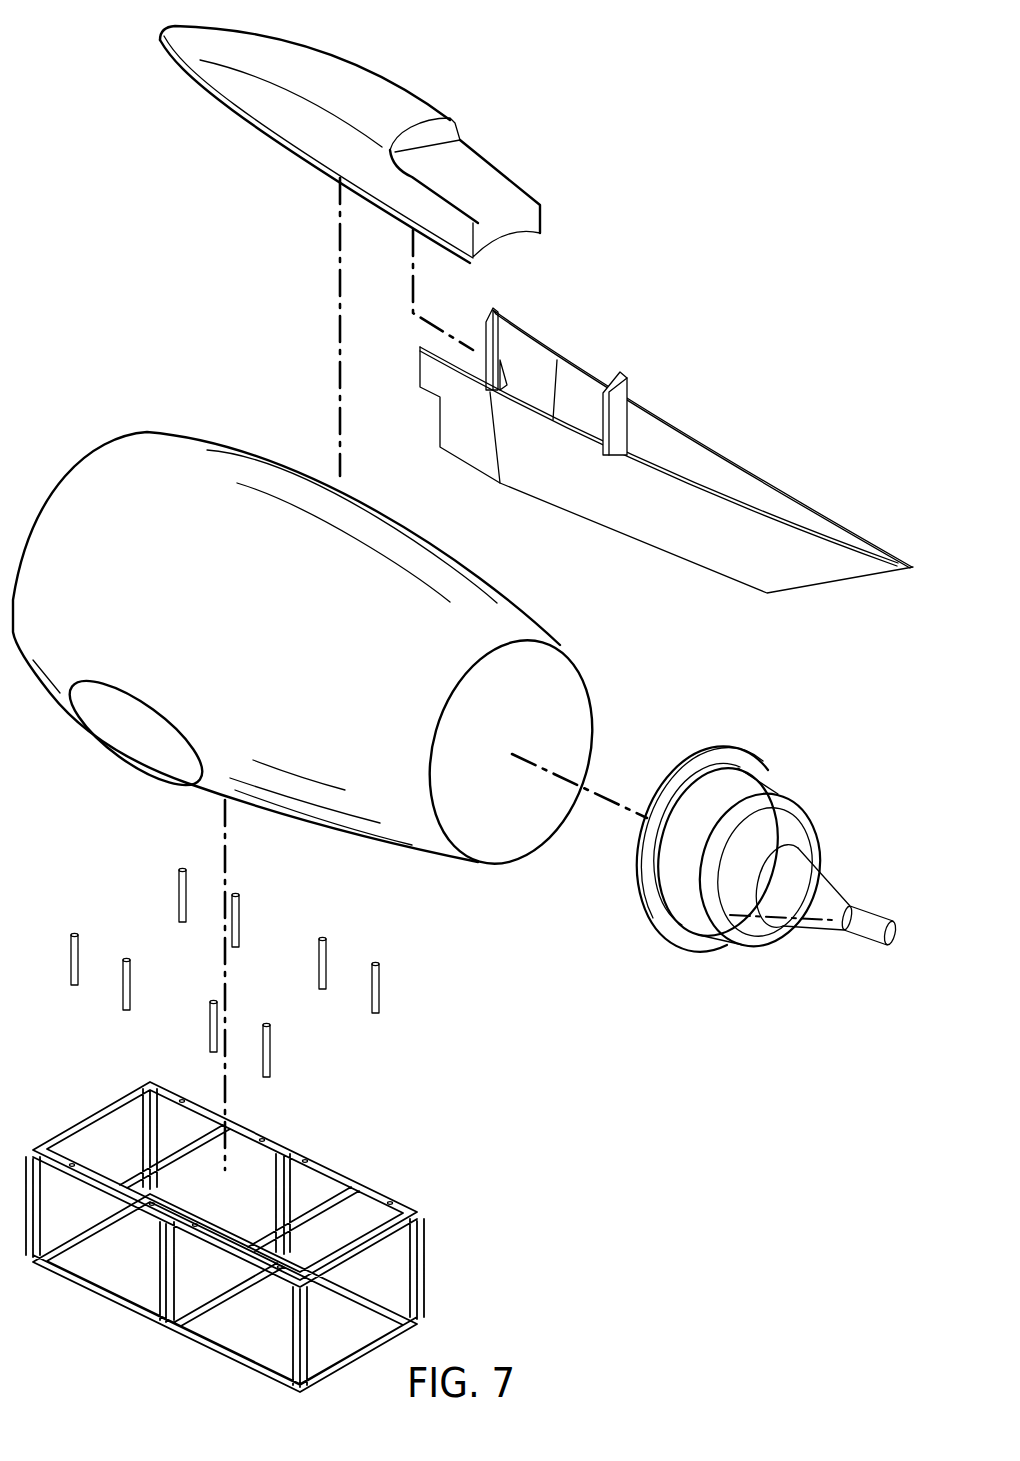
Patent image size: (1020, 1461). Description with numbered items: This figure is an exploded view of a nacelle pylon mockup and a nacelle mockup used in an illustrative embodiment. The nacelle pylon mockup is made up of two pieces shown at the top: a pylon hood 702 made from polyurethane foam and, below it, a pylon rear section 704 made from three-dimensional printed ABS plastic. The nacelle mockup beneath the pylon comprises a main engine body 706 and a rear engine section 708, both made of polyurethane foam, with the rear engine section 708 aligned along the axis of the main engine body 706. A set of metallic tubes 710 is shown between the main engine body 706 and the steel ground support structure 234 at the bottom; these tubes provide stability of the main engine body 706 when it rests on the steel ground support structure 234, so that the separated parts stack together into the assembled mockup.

The pylon hood 702 is at (423, 100).
The pylon rear section 704 is at (693, 443).
The main engine body 706 is at (257, 453).
The rear engine section 708 is at (763, 753).
The metallic tubes 710 is at (380, 987).
The steel ground support structure 234 is at (358, 1180).